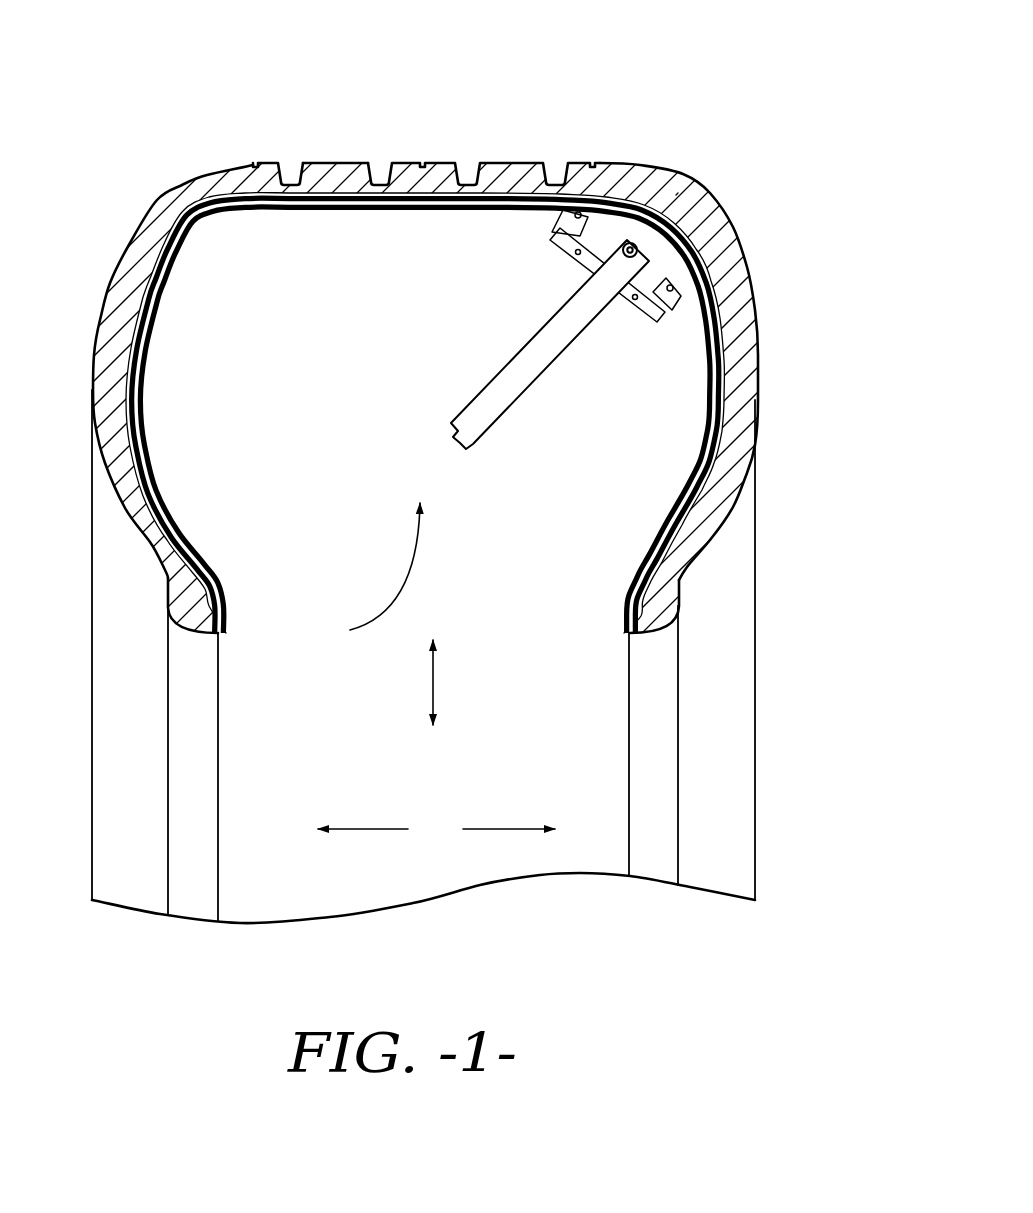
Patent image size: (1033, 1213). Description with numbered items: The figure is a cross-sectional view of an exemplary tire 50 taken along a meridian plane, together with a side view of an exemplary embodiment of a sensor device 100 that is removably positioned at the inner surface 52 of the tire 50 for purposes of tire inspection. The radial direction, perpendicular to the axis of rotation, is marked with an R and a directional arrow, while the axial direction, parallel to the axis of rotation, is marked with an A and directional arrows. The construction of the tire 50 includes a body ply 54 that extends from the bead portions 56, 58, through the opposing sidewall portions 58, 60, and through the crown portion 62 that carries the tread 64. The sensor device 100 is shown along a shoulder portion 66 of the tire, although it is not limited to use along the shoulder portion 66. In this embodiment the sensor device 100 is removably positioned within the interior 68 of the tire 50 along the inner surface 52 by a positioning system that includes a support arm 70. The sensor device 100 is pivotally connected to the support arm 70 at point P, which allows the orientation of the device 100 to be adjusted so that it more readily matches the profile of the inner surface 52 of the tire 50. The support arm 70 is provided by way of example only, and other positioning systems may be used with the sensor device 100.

The tire 50 is at (615, 103).
The inner surface 52 is at (150, 478).
The body ply 54 is at (705, 227).
The bead portion 56 is at (235, 592).
The bead portion 58 is at (614, 619).
The sidewall portion 60 is at (768, 358).
The crown portion 62 is at (443, 178).
The tread 64 is at (343, 161).
The shoulder portion 66 is at (145, 193).
The interior 68 is at (363, 579).
The support arm 70 is at (508, 378).
The sensor device 100 is at (635, 286).
The point P is at (677, 195).
The radial direction R is at (433, 709).
The axial direction A is at (436, 830).